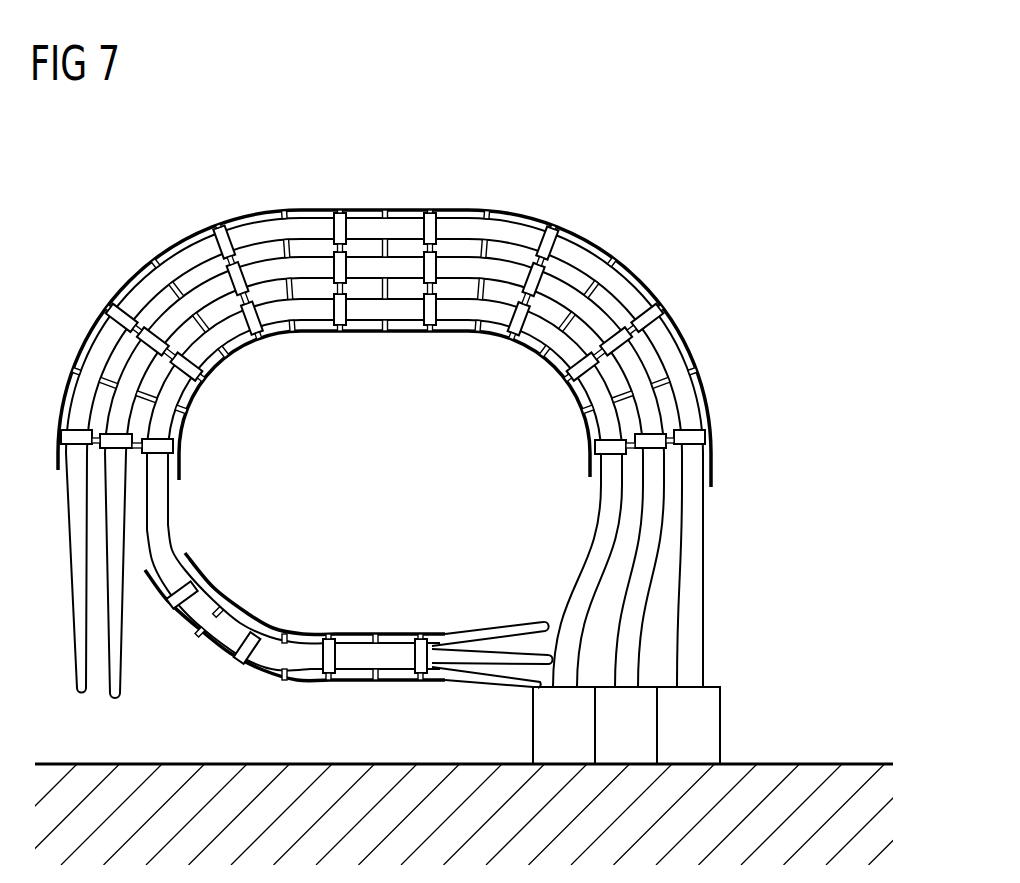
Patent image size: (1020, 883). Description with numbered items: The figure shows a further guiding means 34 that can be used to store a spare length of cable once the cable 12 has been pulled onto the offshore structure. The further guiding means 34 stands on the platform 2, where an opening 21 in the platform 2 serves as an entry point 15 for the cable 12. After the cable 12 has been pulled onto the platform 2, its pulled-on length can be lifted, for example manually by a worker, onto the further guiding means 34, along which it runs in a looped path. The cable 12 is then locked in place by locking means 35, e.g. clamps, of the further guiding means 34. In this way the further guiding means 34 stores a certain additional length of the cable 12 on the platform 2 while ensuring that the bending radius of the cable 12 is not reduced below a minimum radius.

The further guiding means 34 is at (416, 402).
The locking means 35 is at (440, 228).
The cable 12 is at (702, 546).
The entry point 15 is at (666, 675).
The opening 21 is at (728, 658).
The platform 2 is at (814, 764).